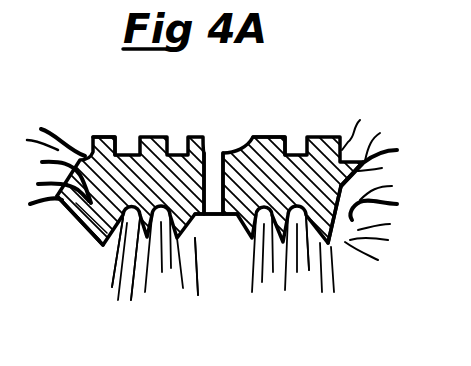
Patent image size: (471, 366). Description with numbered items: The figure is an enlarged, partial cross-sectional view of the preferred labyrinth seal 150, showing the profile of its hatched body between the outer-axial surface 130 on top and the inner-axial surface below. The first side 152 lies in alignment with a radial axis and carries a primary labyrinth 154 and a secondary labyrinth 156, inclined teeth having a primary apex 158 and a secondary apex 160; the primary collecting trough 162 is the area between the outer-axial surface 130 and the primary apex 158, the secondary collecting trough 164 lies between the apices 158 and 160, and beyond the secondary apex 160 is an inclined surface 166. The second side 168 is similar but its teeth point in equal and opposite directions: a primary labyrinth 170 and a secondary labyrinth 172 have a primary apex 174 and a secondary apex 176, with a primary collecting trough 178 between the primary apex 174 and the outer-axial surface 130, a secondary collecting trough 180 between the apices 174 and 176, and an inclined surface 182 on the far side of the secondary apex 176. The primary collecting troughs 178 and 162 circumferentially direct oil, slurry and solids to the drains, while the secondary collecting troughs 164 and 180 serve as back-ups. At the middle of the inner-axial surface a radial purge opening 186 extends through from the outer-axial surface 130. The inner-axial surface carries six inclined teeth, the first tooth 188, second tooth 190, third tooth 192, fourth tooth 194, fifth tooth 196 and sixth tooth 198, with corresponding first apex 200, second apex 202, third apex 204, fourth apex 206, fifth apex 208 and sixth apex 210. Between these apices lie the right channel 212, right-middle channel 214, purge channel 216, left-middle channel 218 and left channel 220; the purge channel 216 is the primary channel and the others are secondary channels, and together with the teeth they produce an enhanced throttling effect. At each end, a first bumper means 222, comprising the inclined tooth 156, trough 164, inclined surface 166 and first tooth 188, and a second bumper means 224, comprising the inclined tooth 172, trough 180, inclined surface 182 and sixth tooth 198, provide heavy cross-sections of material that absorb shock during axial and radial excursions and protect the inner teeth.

The outer-axial surface 130 is at (322, 138).
The labyrinth seal 150 is at (263, 155).
The first side 152 is at (361, 125).
The primary labyrinth 154 is at (382, 166).
The secondary labyrinth 156 is at (387, 222).
The primary apex 158 is at (384, 161).
The secondary apex 160 is at (387, 206).
The primary collecting trough 162 is at (387, 138).
The secondary collecting trough 164 is at (389, 187).
The inclined surface 166 is at (378, 240).
The second side 168 is at (90, 139).
The primary labyrinth 170 is at (52, 175).
The secondary labyrinth 172 is at (74, 220).
The primary apex 174 is at (29, 138).
The secondary apex 176 is at (31, 202).
The primary collecting trough 178 is at (54, 132).
The secondary collecting trough 180 is at (49, 186).
The inclined surface 182 is at (85, 228).
The purge opening 186 is at (222, 150).
The first tooth 188 is at (369, 256).
The second tooth 190 is at (305, 258).
The third tooth 192 is at (236, 228).
The fourth tooth 194 is at (180, 242).
The fifth tooth 196 is at (150, 272).
The sixth tooth 198 is at (95, 247).
The first apex 200 is at (328, 255).
The second apex 202 is at (287, 250).
The third apex 204 is at (252, 240).
The fourth apex 206 is at (186, 265).
The fifth apex 208 is at (130, 302).
The sixth apex 210 is at (120, 238).
The right channel 212 is at (298, 230).
The right-middle channel 214 is at (264, 244).
The purge channel 216 is at (199, 219).
The left-middle channel 218 is at (163, 262).
The left channel 220 is at (122, 240).
The first bumper means 222 is at (343, 258).
The second bumper means 224 is at (82, 238).